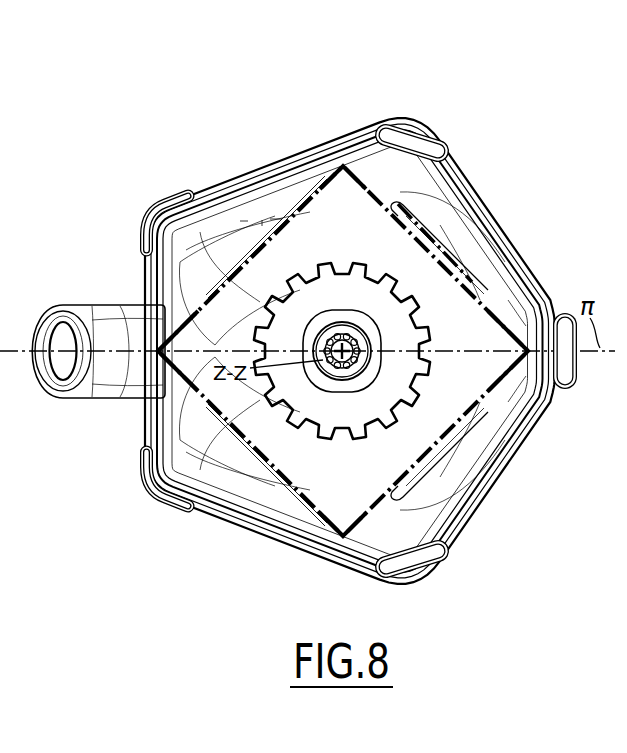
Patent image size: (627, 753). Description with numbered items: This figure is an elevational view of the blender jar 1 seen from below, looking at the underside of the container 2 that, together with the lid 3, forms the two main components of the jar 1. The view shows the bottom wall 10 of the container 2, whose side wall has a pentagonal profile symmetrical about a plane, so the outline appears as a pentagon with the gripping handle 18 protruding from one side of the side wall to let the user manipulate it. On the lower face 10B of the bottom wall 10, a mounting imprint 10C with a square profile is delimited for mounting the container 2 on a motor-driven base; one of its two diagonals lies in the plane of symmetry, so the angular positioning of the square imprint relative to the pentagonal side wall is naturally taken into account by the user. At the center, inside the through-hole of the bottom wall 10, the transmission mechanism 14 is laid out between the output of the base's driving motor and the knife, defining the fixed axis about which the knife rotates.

The blender jar 1 is at (307, 326).
The container 2 is at (478, 179).
The lid 3 is at (436, 113).
The bottom wall 10 is at (320, 488).
The lower face 10B is at (343, 351).
The mounting imprint 10C is at (453, 282).
The transmission mechanism 14 is at (335, 364).
The gripping handle 18 is at (115, 305).